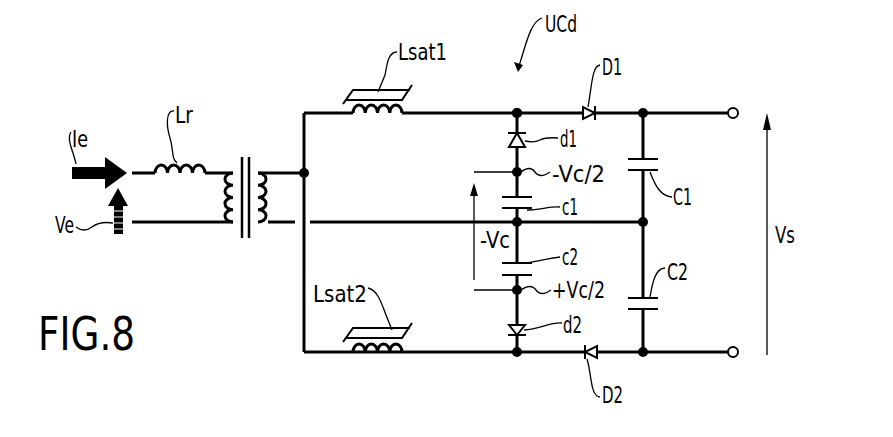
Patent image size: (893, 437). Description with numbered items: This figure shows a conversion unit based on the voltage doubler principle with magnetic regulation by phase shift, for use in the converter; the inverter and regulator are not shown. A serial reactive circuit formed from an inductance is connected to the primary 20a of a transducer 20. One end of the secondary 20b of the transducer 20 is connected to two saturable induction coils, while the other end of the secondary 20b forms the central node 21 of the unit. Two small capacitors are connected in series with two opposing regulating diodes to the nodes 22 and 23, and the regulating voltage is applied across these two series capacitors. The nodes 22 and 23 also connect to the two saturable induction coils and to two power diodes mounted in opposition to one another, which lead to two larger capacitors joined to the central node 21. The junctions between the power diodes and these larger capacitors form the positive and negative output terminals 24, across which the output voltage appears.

The transducer 20 is at (222, 185).
The primary 20a is at (228, 224).
The secondary 20b is at (263, 224).
The central node 21 is at (522, 225).
The node 22 is at (518, 110).
The node 23 is at (519, 357).
The output terminals 24 is at (738, 110).